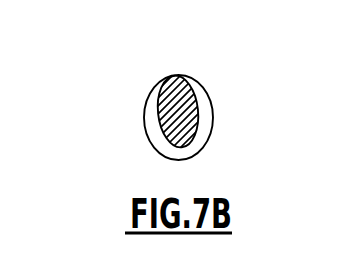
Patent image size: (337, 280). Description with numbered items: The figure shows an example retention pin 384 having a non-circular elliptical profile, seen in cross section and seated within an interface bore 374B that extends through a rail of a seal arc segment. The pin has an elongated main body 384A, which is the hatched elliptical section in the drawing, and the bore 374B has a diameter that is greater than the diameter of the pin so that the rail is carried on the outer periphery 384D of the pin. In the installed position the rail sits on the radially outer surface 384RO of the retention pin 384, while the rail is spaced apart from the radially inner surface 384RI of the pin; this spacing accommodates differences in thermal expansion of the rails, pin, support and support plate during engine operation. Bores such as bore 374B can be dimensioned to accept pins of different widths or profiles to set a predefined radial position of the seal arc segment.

The interface bore 374B is at (205, 102).
The retention pin 384 is at (191, 88).
The radially outer surface 384RO is at (175, 74).
The radially inner surface 384RI is at (178, 148).
The outer periphery 384D is at (160, 110).
The elongated main body 384A is at (170, 125).